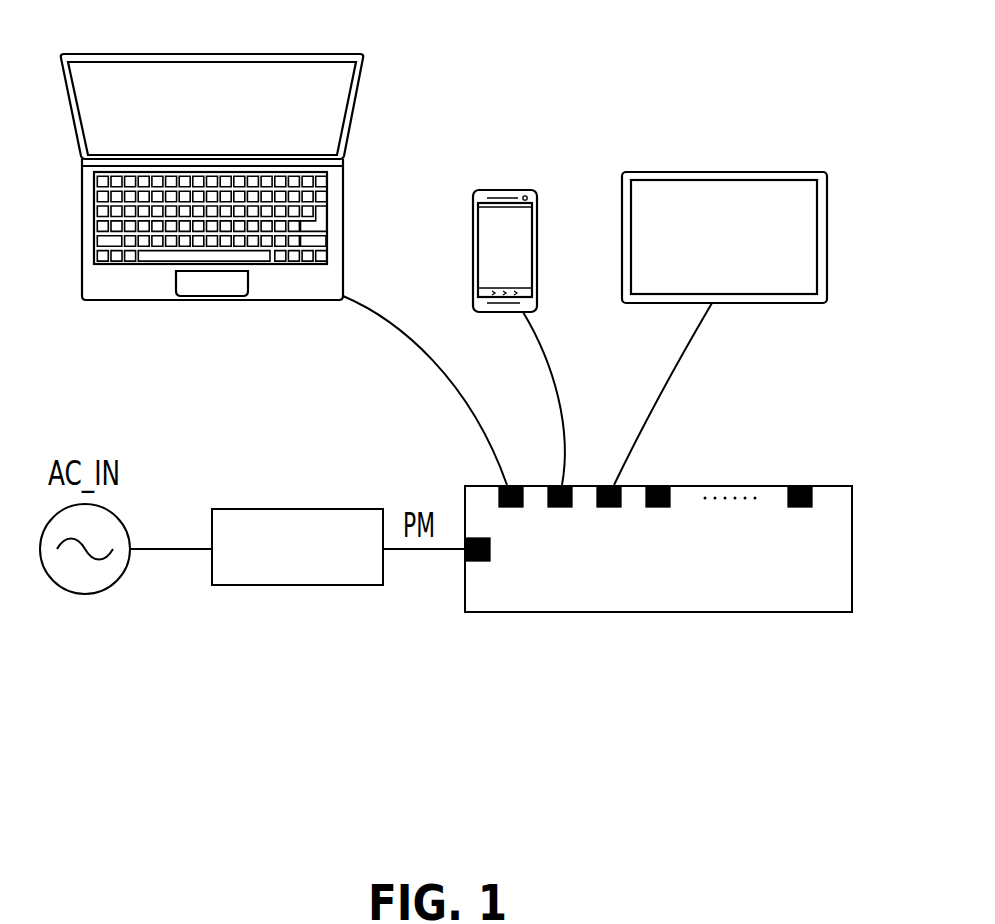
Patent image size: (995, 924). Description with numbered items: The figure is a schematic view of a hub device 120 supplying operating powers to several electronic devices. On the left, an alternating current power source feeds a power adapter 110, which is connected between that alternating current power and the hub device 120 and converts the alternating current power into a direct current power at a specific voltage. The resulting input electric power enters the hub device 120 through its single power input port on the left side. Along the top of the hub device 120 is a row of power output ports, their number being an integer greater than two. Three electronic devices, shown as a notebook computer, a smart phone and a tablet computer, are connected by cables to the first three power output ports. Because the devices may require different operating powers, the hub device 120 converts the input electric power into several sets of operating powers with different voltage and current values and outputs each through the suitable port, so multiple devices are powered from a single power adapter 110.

The power adapter 110 is at (347, 586).
The hub device 120 is at (642, 564).